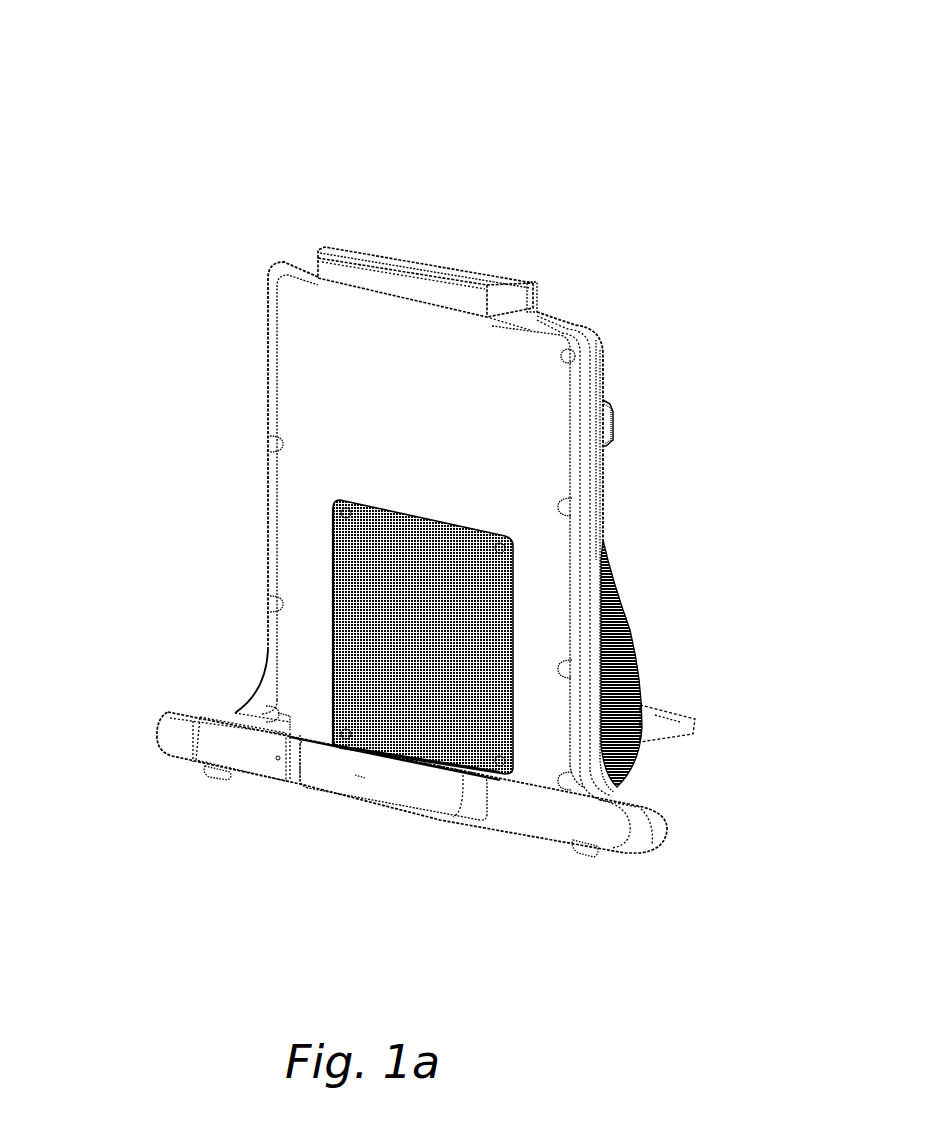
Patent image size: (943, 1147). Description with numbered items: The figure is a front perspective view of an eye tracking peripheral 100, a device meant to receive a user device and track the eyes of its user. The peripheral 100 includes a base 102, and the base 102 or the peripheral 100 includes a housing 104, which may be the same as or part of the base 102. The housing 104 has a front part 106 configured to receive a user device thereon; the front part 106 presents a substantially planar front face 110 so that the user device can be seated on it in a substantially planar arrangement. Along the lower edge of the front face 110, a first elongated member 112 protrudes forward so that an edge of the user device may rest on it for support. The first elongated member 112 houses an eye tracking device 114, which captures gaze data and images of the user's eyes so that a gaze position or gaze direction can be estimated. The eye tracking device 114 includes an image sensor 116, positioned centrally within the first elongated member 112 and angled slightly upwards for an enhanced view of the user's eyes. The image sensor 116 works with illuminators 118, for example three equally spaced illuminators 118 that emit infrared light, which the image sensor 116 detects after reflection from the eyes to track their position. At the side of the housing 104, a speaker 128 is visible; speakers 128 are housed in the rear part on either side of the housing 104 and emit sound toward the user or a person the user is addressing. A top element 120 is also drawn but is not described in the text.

The eye tracking peripheral 100 is at (521, 69).
The base 102 is at (186, 500).
The housing 104 is at (595, 473).
The front part 106 is at (352, 421).
The front face 110 is at (465, 383).
The first elongated member 112 is at (158, 745).
The eye tracking device 114 is at (270, 772).
The image sensor 116 is at (383, 787).
The illuminator 118 is at (173, 743).
The top bar 120 is at (348, 258).
The speaker 128 is at (627, 687).